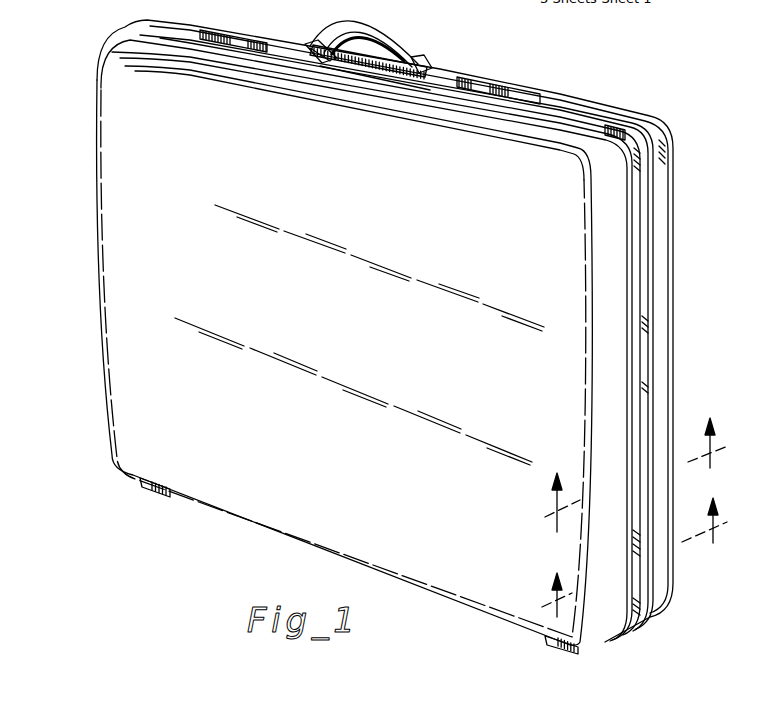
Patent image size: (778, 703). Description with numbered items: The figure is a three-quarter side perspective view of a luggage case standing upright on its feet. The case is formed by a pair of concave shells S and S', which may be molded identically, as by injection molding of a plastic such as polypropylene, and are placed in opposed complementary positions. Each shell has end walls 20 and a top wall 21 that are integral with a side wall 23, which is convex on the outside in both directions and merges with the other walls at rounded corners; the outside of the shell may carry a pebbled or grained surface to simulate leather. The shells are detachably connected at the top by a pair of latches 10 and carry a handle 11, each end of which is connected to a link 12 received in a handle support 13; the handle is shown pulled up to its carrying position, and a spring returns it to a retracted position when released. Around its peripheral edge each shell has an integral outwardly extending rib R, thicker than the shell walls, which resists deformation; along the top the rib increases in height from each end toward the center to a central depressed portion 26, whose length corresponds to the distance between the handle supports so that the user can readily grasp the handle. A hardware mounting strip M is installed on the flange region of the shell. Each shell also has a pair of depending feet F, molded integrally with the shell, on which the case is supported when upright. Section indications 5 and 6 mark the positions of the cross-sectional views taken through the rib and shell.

The latch 10 is at (587, 117).
The handle 11 is at (390, 34).
The link 12 is at (430, 53).
The handle support 13 is at (292, 42).
The end wall 20 is at (603, 297).
The top wall 21 is at (437, 107).
The side wall 23 is at (349, 314).
The central depressed portion 26 is at (350, 72).
The section line 5- 5 is at (636, 463).
The section line 6- 6 is at (634, 546).
The shell S is at (307, 355).
The shell S' is at (411, 331).
The rib R is at (118, 33).
The hardware mounting strip M is at (647, 160).
The foot F is at (137, 482).